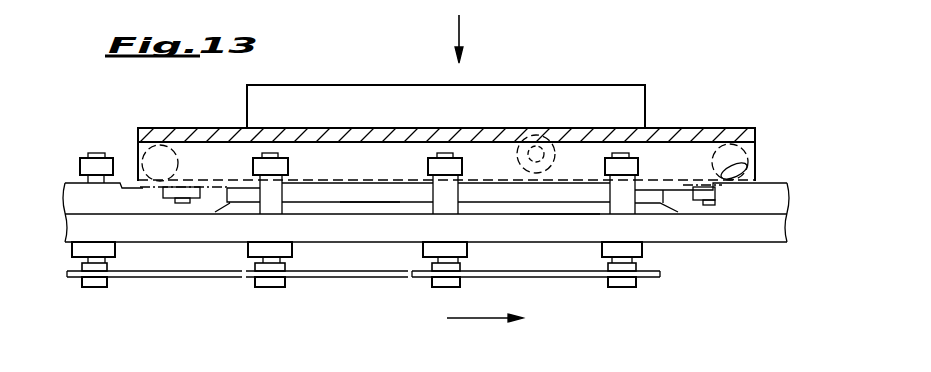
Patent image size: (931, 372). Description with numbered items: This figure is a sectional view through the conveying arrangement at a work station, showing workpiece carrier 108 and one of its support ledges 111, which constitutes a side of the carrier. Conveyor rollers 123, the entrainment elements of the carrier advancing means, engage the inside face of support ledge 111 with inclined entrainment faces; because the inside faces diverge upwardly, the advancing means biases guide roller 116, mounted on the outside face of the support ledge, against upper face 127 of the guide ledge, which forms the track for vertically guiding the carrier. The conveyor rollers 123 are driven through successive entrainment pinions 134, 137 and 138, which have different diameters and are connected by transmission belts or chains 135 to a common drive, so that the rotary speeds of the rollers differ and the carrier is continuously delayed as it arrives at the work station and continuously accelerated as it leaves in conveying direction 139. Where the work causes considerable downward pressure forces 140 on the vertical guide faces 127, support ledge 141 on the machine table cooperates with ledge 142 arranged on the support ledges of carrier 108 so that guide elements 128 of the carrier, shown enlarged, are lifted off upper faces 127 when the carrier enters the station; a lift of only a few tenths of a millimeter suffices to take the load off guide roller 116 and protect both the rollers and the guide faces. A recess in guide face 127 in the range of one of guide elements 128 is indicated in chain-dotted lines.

The workpiece carrier 108 is at (380, 133).
The support ledge 111 is at (387, 168).
The guide roller 116 is at (748, 170).
The conveyor roller 123 is at (103, 166).
The upper face of guide ledge 127 is at (780, 183).
The guide element 128 is at (160, 163).
The entrainment pinion 134 is at (268, 286).
The transmission belt or chain 135 is at (205, 273).
The entrainment pinion 137 is at (112, 278).
The entrainment pinion 138 is at (417, 275).
The conveying direction 139 is at (475, 318).
The downward pressure force 140 is at (461, 28).
The support ledge 141 is at (357, 205).
The ledge 142 is at (562, 192).